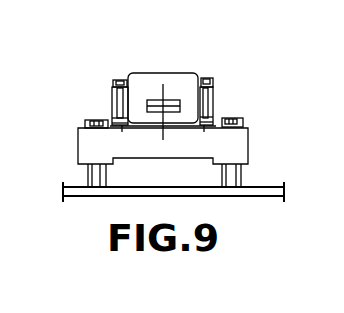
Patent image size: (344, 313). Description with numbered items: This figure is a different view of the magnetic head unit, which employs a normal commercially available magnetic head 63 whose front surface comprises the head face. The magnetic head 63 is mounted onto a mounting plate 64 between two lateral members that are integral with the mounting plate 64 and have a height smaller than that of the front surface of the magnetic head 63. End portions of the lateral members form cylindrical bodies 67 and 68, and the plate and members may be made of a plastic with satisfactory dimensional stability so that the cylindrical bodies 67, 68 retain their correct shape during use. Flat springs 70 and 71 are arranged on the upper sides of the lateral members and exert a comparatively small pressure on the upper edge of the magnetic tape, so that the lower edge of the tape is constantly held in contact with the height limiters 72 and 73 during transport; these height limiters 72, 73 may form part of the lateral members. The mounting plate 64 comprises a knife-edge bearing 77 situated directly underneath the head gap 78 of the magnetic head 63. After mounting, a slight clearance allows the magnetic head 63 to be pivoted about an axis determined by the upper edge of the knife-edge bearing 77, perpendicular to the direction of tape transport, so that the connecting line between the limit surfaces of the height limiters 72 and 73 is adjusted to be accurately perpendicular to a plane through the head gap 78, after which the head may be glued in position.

The magnetic head 63 is at (145, 84).
The mounting plate 64 is at (240, 137).
The cylindrical body 67 is at (204, 101).
The cylindrical body 68 is at (118, 102).
The flat spring 70 is at (212, 92).
The flat spring 71 is at (114, 86).
The height limiter 72 is at (203, 128).
The height limiter 73 is at (120, 128).
The knife-edge bearing 77 is at (162, 140).
The head gap 78 is at (167, 94).